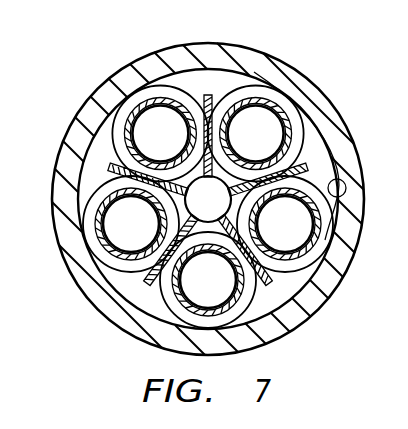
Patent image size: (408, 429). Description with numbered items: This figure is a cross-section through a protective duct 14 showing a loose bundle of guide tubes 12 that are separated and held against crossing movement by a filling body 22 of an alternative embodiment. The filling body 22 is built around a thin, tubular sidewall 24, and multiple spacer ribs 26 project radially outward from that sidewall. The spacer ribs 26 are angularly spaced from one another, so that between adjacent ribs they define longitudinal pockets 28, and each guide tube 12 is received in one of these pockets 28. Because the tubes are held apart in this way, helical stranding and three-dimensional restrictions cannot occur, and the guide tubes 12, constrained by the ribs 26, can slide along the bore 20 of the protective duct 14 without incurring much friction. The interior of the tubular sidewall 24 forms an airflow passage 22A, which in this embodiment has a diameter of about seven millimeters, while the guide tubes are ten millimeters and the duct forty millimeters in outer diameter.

The guide tubes 12 is at (283, 100).
The protective duct 14 is at (108, 79).
The bore 20 is at (347, 190).
The filling body 22 is at (176, 90).
The airflow passage 22A is at (258, 221).
The tubular sidewall 24 is at (240, 157).
The spacer ribs 26 is at (205, 97).
The longitudinal pockets 28 is at (254, 72).